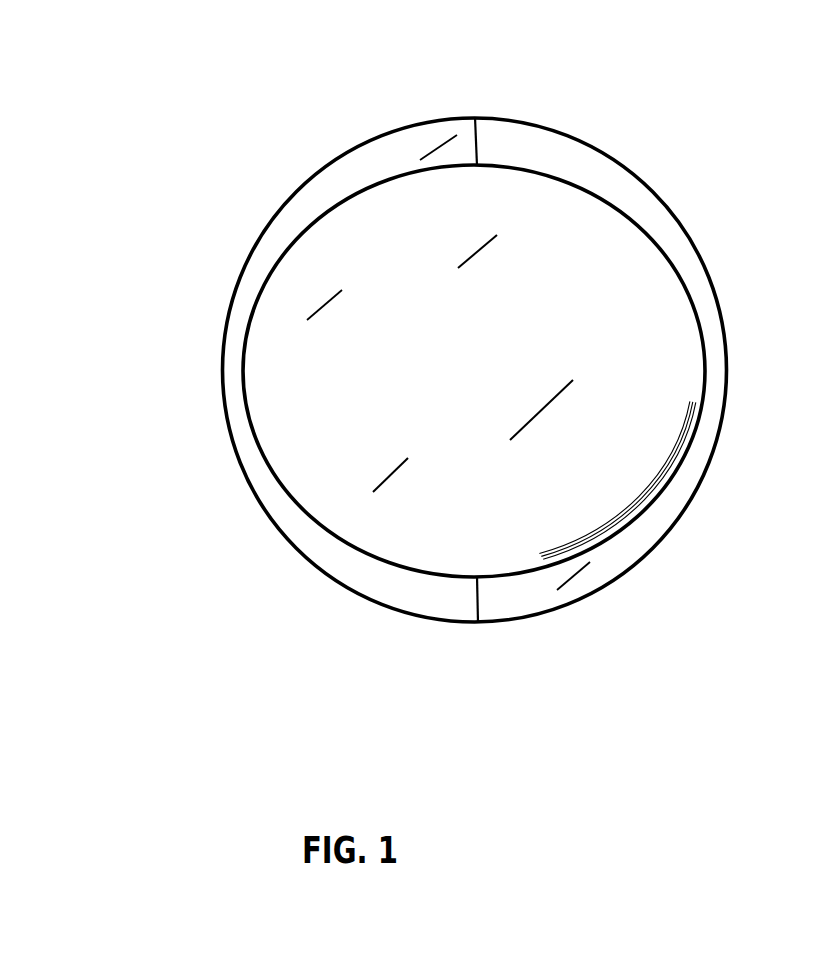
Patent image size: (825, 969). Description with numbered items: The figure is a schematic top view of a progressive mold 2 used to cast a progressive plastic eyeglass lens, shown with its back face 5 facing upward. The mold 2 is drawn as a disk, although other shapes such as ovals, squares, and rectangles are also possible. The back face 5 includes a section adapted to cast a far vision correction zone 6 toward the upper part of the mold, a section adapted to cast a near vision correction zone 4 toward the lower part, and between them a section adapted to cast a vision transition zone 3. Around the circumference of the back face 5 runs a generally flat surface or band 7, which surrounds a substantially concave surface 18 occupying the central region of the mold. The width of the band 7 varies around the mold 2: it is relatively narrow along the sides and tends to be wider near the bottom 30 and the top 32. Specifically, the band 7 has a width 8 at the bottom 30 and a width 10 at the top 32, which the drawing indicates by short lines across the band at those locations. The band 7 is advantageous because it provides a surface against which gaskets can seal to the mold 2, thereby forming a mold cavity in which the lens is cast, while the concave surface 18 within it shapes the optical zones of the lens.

The progressive mold 2 is at (665, 181).
The vision transition zone 3 is at (457, 395).
The near vision correction zone 4 is at (421, 481).
The back face 5 is at (312, 415).
The far vision correction zone 6 is at (470, 277).
The band 7 is at (705, 440).
The width 8 is at (480, 601).
The width 10 is at (478, 143).
The concave surface 18 is at (560, 349).
The bottom 30 is at (517, 622).
The top 32 is at (442, 103).